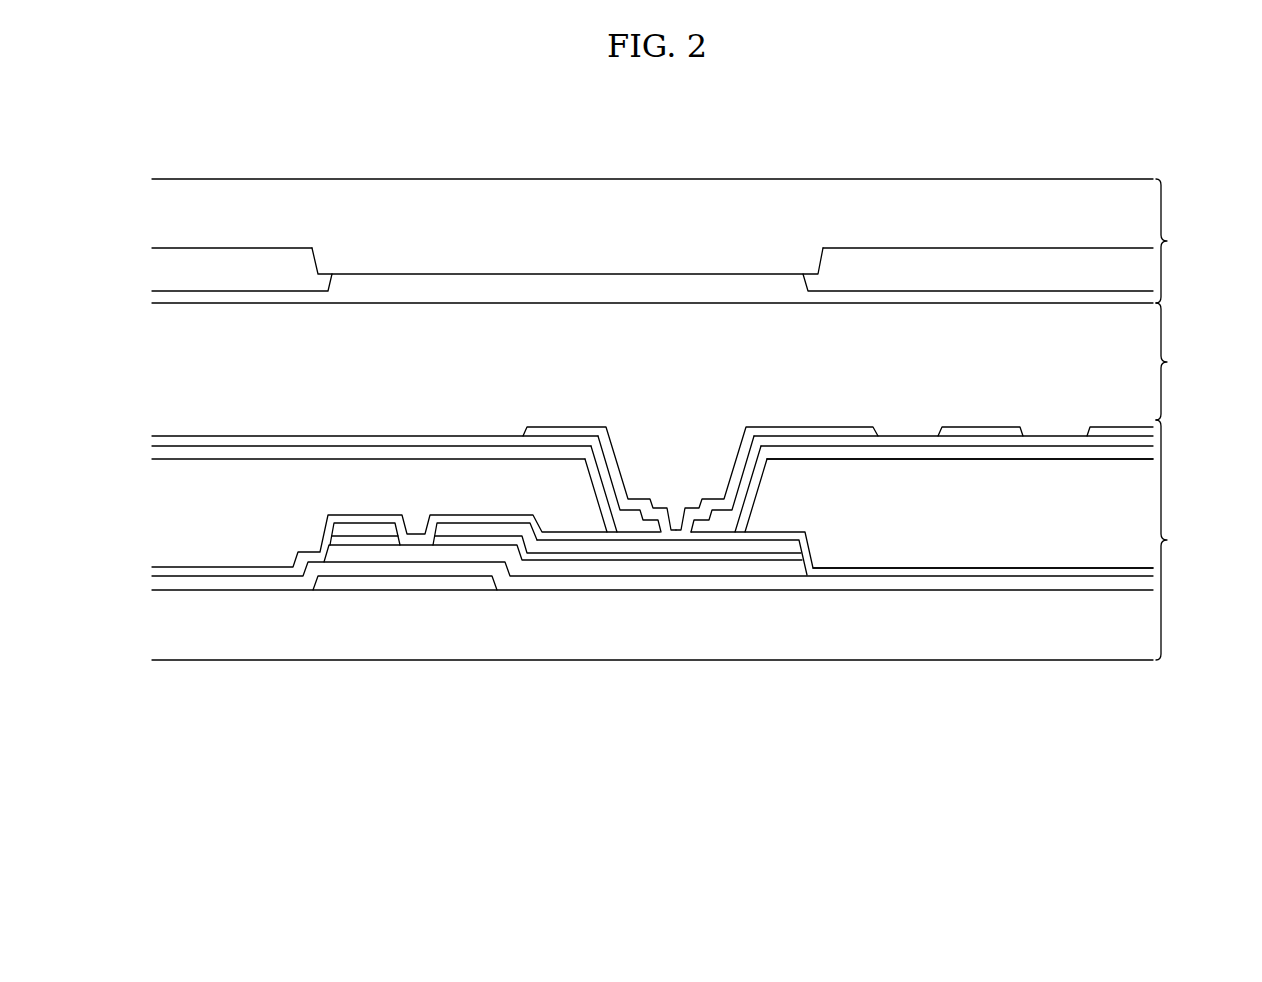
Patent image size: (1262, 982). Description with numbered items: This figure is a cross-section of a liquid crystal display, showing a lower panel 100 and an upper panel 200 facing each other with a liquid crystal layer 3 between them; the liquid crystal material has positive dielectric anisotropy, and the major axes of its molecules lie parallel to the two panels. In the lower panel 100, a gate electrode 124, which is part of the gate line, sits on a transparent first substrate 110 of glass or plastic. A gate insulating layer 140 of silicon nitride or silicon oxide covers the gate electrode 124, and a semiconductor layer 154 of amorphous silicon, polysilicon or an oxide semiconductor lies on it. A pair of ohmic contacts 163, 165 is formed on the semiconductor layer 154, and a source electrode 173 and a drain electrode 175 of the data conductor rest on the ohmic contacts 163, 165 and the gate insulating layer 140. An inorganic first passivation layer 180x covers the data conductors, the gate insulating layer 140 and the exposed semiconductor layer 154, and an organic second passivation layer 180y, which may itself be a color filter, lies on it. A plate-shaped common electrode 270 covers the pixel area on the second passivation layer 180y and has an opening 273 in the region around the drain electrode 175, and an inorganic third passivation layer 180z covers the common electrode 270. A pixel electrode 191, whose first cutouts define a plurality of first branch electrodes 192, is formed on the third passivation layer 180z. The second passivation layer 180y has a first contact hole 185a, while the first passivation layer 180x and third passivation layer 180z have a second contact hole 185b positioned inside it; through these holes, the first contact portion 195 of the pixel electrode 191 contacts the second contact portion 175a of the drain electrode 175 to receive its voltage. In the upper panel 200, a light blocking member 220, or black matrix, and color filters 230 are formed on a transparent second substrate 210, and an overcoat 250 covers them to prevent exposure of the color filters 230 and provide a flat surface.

The lower panel 100 is at (1185, 540).
The first substrate 110 is at (1118, 640).
The gate electrode 124 is at (427, 583).
The gate insulating layer 140 is at (232, 588).
The semiconductor layer 154 is at (533, 570).
The ohmic contact 163 is at (343, 543).
The ohmic contact 165 is at (596, 557).
The source electrode 173 is at (378, 533).
The drain electrode 175 is at (472, 534).
The second contact portion 175a is at (683, 548).
The first passivation layer 180x is at (943, 572).
The second passivation layer 180y is at (998, 550).
The third passivation layer 180z is at (1123, 442).
The first contact hole 185a is at (586, 470).
The second contact hole 185b is at (656, 526).
The pixel electrode 191 is at (845, 428).
The first branch electrode 192 is at (985, 427).
The first contact portion 195 is at (533, 428).
The upper panel 200 is at (1185, 241).
The second substrate 210 is at (1035, 210).
The light blocking member 220 is at (426, 262).
The color filter 230 is at (227, 265).
The overcoat 250 is at (766, 289).
The common electrode 270 is at (1050, 453).
The opening 273 is at (648, 534).
The liquid crystal layer 3 is at (1171, 361).